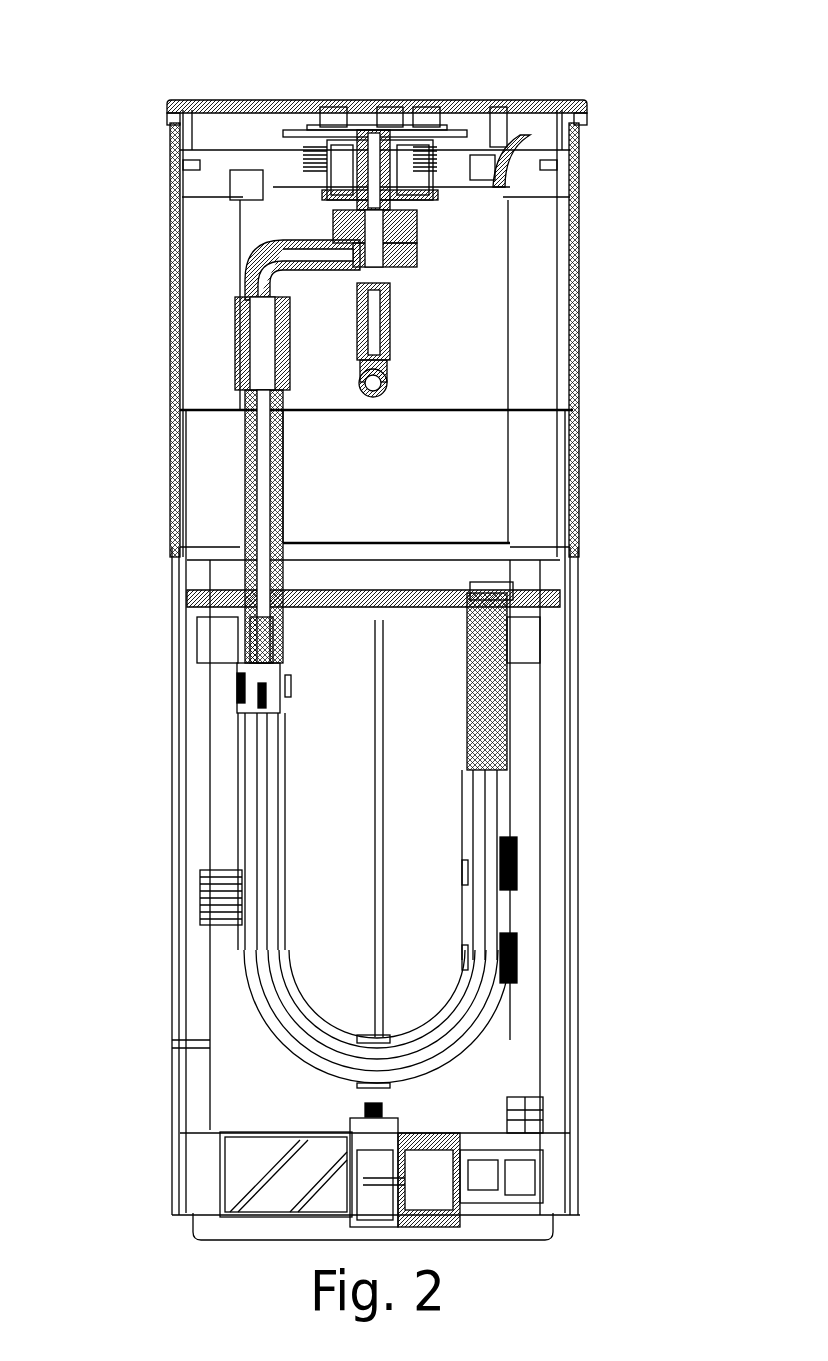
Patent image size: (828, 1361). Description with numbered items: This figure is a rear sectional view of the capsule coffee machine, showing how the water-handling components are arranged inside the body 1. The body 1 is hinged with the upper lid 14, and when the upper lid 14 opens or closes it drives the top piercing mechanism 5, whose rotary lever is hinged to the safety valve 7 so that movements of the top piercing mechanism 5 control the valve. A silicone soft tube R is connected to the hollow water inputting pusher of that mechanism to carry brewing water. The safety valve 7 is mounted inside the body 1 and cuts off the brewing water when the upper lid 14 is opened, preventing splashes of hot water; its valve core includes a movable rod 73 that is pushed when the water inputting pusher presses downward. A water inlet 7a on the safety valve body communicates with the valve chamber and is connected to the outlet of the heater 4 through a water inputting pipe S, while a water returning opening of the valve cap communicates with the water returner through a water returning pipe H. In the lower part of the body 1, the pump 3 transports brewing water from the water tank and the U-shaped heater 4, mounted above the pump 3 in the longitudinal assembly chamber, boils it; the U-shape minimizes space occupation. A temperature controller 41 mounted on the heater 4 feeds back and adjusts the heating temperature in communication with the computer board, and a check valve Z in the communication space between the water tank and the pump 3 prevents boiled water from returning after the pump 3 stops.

The body 1 is at (178, 718).
The pump 3 is at (240, 1162).
The heater 4 is at (513, 900).
The top piercing mechanism 5 is at (393, 128).
The safety valve 7 is at (415, 228).
The water inlet 7a is at (300, 245).
The upper lid 14 is at (493, 110).
The temperature controller 41 is at (240, 903).
The movable rod 73 is at (380, 300).
The water returning pipe H is at (385, 378).
The silicone soft tube R is at (365, 130).
The water inputting pipe S is at (245, 305).
The check valve Z is at (545, 1108).